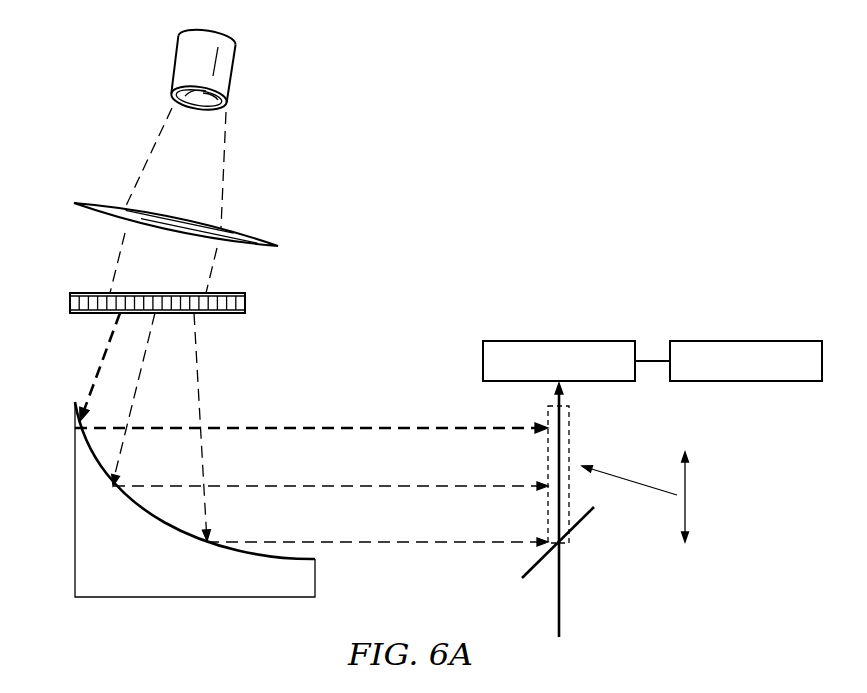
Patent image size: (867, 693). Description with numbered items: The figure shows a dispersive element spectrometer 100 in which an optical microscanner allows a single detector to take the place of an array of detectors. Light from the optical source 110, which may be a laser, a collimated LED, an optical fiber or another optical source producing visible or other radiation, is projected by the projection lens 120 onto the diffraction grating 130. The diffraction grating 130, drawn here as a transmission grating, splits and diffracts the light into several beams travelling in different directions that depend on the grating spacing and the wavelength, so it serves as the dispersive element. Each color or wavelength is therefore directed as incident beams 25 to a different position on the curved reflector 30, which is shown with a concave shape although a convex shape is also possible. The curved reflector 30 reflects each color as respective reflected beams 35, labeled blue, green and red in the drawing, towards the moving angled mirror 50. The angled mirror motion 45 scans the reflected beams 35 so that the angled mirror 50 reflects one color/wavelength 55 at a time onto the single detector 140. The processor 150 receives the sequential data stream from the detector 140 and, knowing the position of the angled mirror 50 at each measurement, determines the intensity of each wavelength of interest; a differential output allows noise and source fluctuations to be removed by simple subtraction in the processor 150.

The dispersive element spectrometer 100 is at (455, 180).
The optical source 110 is at (177, 68).
The projection lens 120 is at (74, 205).
The diffraction grating 130 is at (70, 302).
The incident beams 25 is at (100, 368).
The curved reflector 30 is at (75, 575).
The reflected beams 35 is at (438, 545).
The angled mirror motion 45 is at (687, 503).
The moving angled mirror 50 is at (583, 523).
The one color/wavelength 55 is at (562, 442).
The detector 140 is at (568, 341).
The processor 150 is at (752, 341).